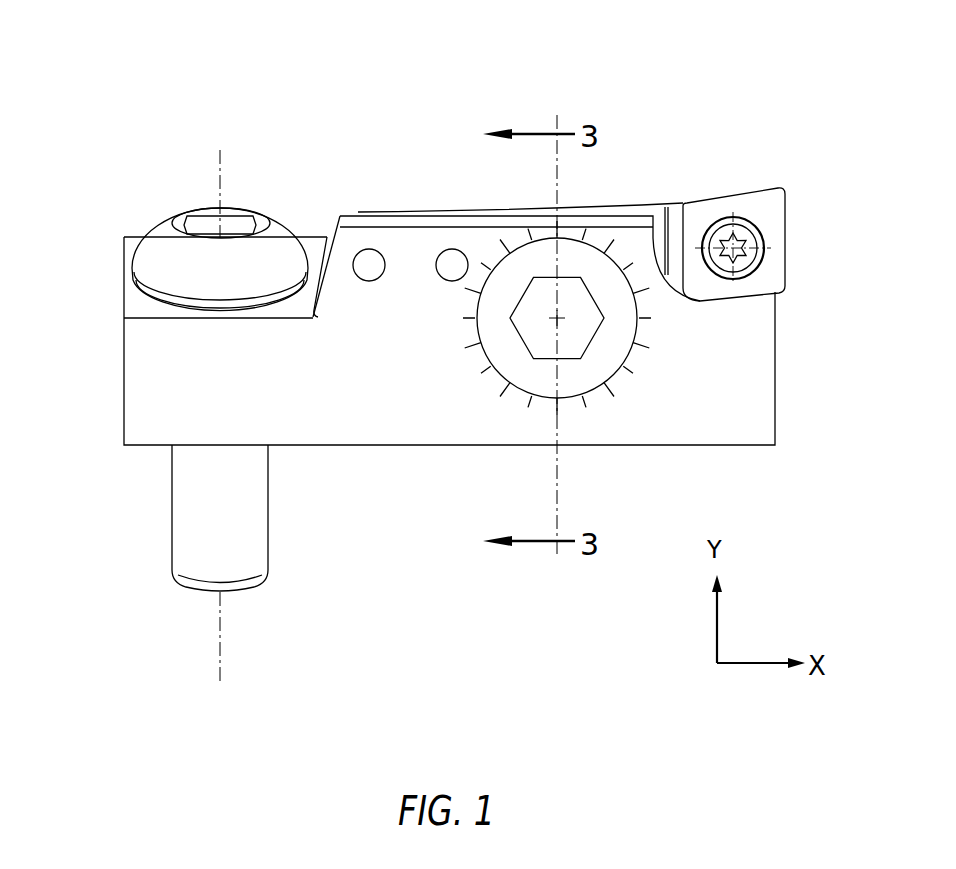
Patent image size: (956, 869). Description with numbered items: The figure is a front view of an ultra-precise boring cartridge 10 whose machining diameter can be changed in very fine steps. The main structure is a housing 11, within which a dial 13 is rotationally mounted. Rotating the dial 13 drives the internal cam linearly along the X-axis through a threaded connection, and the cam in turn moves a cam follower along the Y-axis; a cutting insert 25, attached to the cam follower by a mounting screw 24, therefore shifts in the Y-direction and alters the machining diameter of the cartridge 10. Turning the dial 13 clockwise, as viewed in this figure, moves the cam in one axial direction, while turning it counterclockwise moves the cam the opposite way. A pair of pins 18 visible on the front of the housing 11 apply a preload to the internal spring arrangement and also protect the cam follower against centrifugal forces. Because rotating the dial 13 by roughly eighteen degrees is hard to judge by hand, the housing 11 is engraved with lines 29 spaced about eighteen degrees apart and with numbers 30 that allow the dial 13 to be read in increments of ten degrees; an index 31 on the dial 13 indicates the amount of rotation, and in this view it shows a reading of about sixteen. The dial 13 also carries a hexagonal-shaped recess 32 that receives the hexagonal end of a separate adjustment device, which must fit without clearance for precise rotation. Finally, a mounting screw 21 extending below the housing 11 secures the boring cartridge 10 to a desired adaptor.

The ultra-precise boring cartridge 10 is at (176, 70).
The housing 11 is at (118, 390).
The dial 13 is at (555, 319).
The pins 18 is at (440, 247).
The mounting screw 21 is at (165, 527).
The mounting screw 24 is at (746, 256).
The cutting insert 25 is at (790, 240).
The lines 29 is at (590, 416).
The numbers 30 is at (634, 423).
The index 31 is at (501, 344).
The hexagonal-shaped recess 32 is at (589, 291).